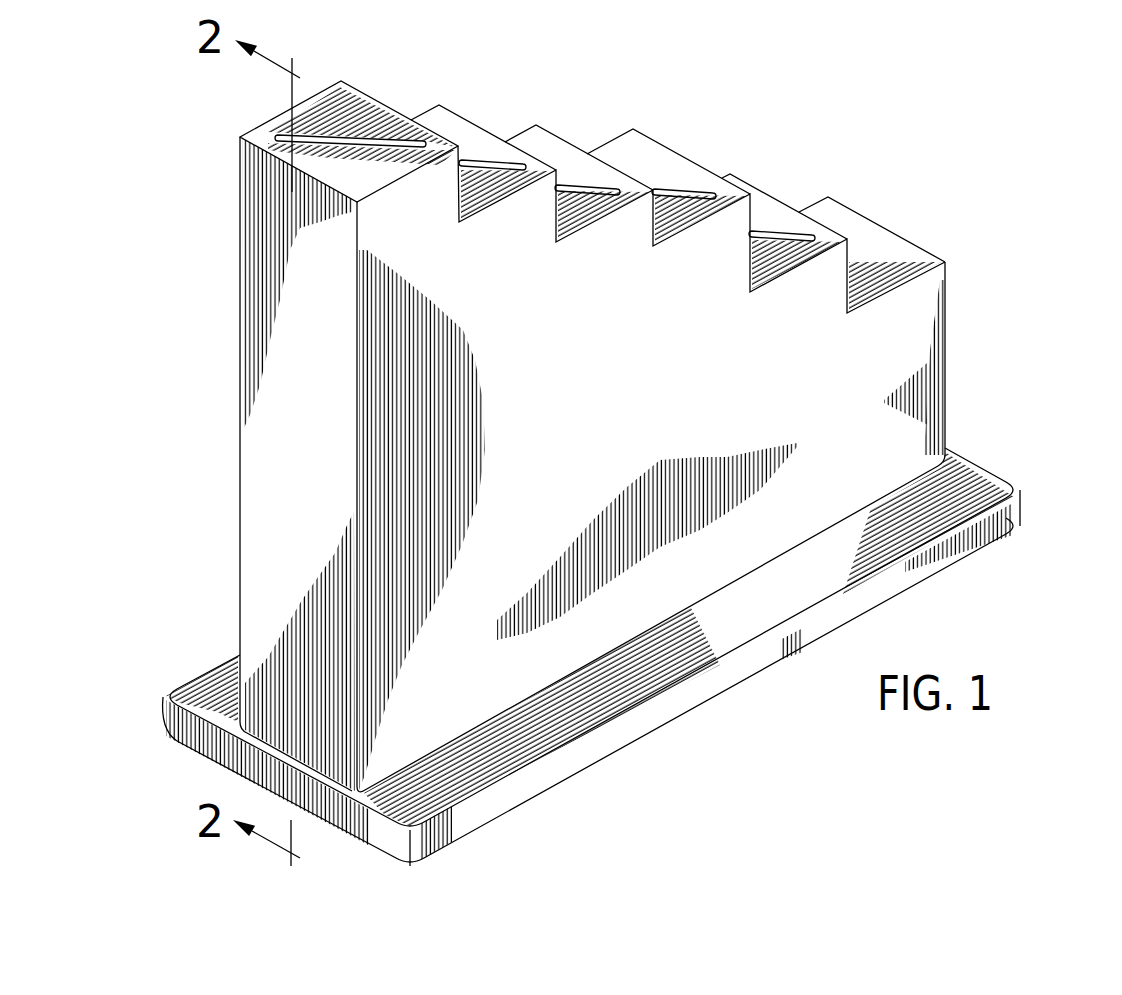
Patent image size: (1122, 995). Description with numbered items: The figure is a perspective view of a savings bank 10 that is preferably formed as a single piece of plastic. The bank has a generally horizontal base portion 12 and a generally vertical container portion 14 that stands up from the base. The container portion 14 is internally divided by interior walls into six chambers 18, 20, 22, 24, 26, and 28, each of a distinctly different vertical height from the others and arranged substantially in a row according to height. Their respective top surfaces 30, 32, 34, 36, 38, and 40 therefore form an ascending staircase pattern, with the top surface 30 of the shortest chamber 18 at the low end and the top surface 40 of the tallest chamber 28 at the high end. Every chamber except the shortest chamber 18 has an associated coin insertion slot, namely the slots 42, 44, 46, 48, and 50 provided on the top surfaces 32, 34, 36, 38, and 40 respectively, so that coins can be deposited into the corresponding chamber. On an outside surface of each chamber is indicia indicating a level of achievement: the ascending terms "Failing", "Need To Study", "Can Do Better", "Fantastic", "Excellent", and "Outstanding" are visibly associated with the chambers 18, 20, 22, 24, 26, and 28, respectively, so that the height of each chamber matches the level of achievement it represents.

The savings bank 10 is at (623, 451).
The base portion 12 is at (1056, 489).
The container portion 14 is at (537, 414).
The internal chamber 18 is at (922, 359).
The internal chamber 20 is at (833, 345).
The internal chamber 22 is at (730, 303).
The internal chamber 24 is at (632, 287).
The internal chamber 26 is at (535, 265).
The internal chamber 28 is at (435, 237).
The top surface 30 is at (907, 253).
The top surface 32 is at (786, 206).
The top surface 34 is at (668, 161).
The top surface 36 is at (579, 158).
The top surface 38 is at (483, 137).
The top surface 40 is at (362, 101).
The coin insertion slot 42 is at (778, 233).
The coin insertion slot 44 is at (668, 188).
The coin insertion slot 46 is at (567, 183).
The coin insertion slot 48 is at (480, 163).
The coin insertion slot 50 is at (345, 137).